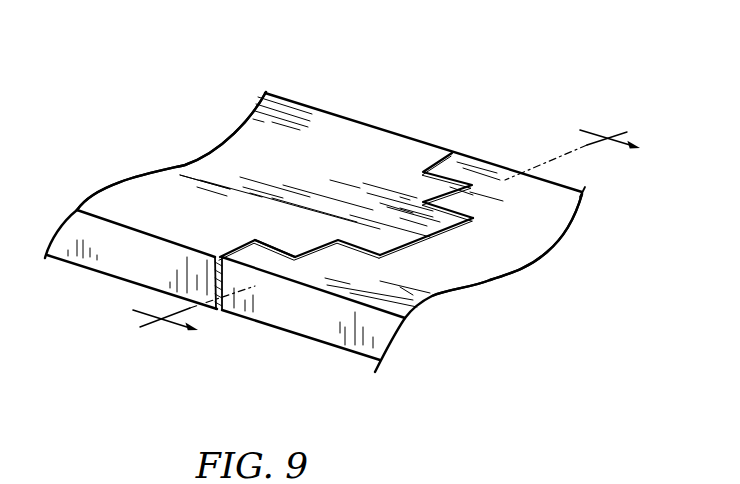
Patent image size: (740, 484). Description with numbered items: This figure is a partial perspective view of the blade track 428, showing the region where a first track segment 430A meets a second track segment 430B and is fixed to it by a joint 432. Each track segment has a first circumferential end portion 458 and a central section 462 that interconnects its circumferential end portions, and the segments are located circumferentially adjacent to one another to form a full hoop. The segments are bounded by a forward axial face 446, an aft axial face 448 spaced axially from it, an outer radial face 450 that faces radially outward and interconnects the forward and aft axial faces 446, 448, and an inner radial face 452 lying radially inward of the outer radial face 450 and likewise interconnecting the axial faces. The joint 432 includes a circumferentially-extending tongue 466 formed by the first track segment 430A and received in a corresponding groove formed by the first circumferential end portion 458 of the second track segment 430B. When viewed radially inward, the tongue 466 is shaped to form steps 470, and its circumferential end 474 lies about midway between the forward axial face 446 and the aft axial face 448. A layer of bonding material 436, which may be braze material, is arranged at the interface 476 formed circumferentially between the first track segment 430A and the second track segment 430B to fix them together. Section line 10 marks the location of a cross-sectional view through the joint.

The blade track 428 is at (613, 60).
The first track segment 430A is at (285, 155).
The second track segment 430B is at (558, 204).
The joint 432 is at (372, 246).
The layer of bonding material 436 is at (449, 155).
The forward axial face 446 is at (77, 242).
The aft axial face 448 is at (347, 140).
The outer radial face 450 is at (150, 200).
The inner radial face 452 is at (128, 253).
The first circumferential end portion 458 is at (413, 297).
The central section 462 is at (222, 167).
The circumferentially-extending tongue 466 is at (287, 266).
The steps 470 is at (316, 243).
The circumferential end 474 is at (453, 228).
The interface 476 is at (233, 247).
The section line 10- 10 is at (368, 221).